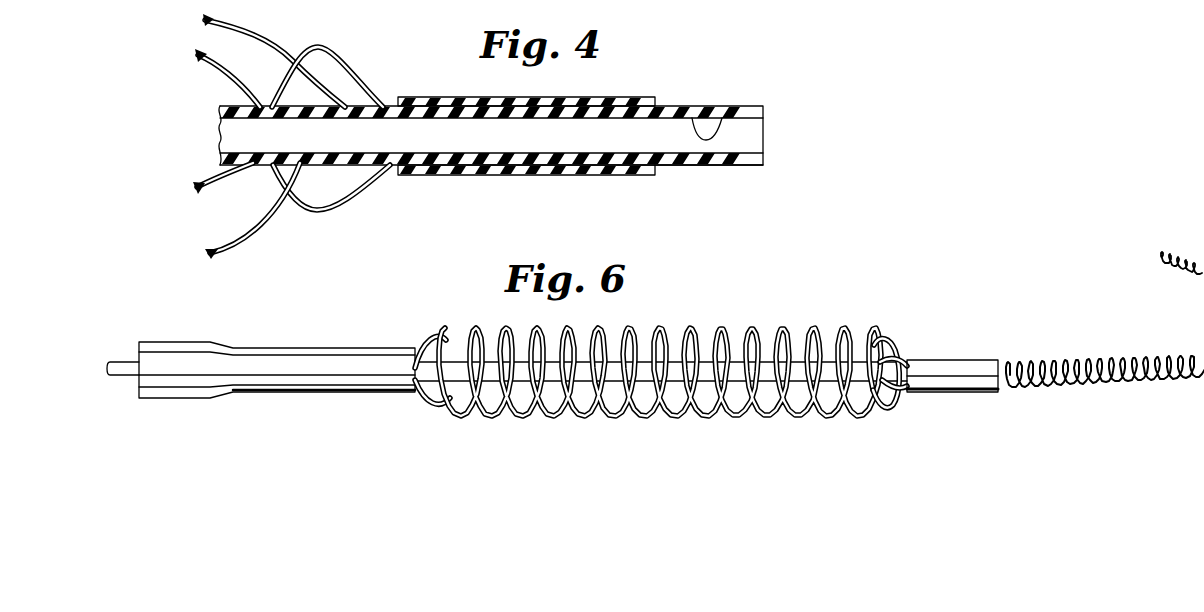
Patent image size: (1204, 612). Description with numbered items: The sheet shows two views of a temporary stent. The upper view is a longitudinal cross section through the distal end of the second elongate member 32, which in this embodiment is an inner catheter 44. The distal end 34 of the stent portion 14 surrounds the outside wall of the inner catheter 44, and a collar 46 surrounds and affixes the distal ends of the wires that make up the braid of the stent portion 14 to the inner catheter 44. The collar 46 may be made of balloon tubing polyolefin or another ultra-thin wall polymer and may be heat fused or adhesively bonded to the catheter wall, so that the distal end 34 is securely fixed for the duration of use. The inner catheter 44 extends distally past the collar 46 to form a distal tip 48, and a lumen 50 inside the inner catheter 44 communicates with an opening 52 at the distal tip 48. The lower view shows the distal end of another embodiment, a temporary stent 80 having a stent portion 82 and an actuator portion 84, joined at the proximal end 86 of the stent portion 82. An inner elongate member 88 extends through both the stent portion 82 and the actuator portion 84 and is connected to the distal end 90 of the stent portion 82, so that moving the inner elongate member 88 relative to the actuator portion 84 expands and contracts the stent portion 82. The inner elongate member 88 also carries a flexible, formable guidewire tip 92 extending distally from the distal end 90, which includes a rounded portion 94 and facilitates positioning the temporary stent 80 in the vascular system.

In FIG. 4, the stent portion 14 is at (242, 250).
In FIG. 4, the second elongate member 32 is at (293, 107).
In FIG. 4, the distal end of the stent portion 34 is at (364, 187).
In FIG. 4, the inner catheter 44 is at (312, 107).
In FIG. 4, the collar 46 is at (563, 177).
In FIG. 4, the distal tip 48 is at (712, 168).
In FIG. 4, the lumen 50 is at (728, 118).
In FIG. 4, the opening 52 is at (748, 137).
In FIG. 6, the temporary stent 80 is at (645, 399).
In FIG. 6, the stent portion 82 is at (689, 425).
In FIG. 6, the actuator portion 84 is at (167, 396).
In FIG. 6, the proximal end of the stent portion 86 is at (431, 397).
In FIG. 6, the inner elongate member 88 is at (853, 363).
In FIG. 6, the distal end of the stent portion 90 is at (901, 404).
In FIG. 6, the guidewire tip 92 is at (1124, 362).
In FIG. 6, the rounded portion 94 is at (1158, 255).